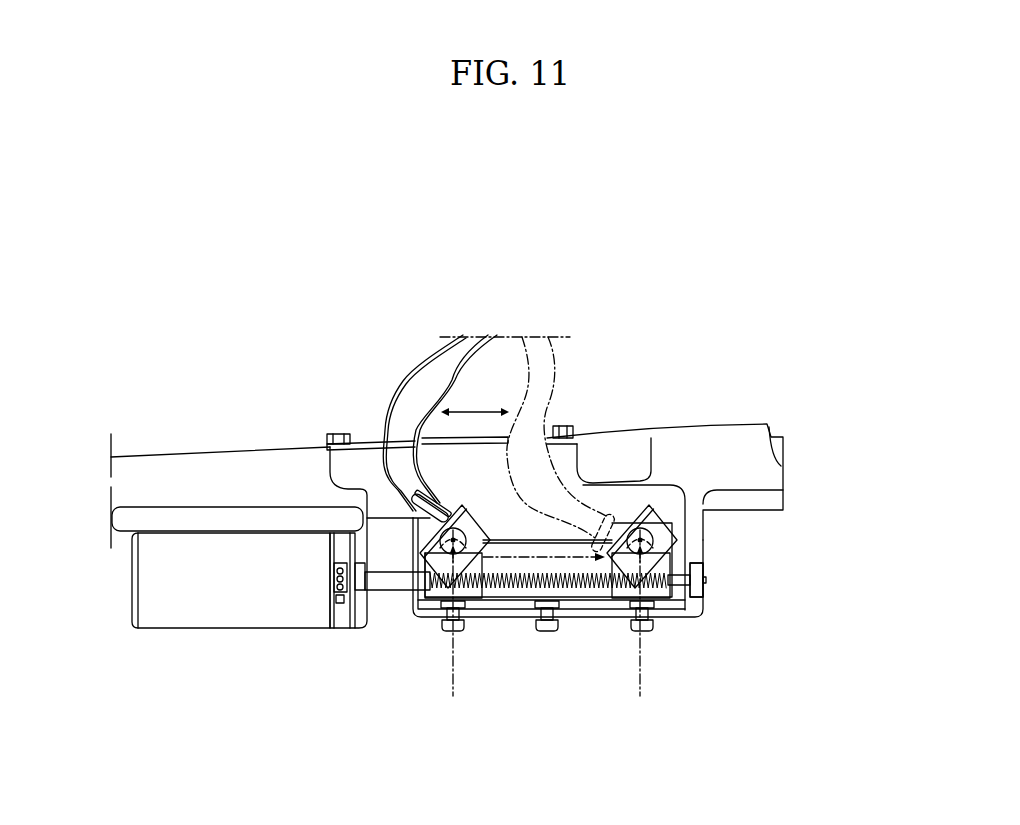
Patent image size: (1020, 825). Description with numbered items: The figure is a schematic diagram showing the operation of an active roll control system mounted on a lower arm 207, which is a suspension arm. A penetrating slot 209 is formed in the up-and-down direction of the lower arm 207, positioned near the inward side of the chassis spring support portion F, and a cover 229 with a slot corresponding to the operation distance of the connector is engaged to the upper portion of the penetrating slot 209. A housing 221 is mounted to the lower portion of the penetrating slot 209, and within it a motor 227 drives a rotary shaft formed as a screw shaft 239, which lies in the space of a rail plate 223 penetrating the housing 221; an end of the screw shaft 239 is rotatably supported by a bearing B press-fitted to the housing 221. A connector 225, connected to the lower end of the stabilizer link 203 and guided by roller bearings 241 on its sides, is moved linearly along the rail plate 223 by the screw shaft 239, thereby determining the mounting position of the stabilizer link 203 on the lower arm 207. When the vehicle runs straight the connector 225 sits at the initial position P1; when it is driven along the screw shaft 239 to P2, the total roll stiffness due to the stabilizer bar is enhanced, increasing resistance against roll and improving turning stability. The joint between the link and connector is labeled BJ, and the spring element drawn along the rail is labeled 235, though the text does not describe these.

The stabilizer link 203 is at (437, 373).
The lower arm 207 is at (255, 467).
The penetrating slot 209 is at (478, 465).
The housing 221 is at (685, 612).
The rail plate 223 is at (575, 601).
The connector 225 is at (493, 598).
The motor 227 is at (225, 615).
The cover 229 is at (367, 437).
The spring 235 is at (523, 600).
The screw shaft 239 is at (602, 598).
The roller bearings 241 is at (428, 630).
The ball joint BJ is at (418, 527).
The bearing B is at (700, 565).
The chassis spring support portion F is at (630, 483).
The initial position P1 is at (459, 632).
The second position P2 is at (642, 632).